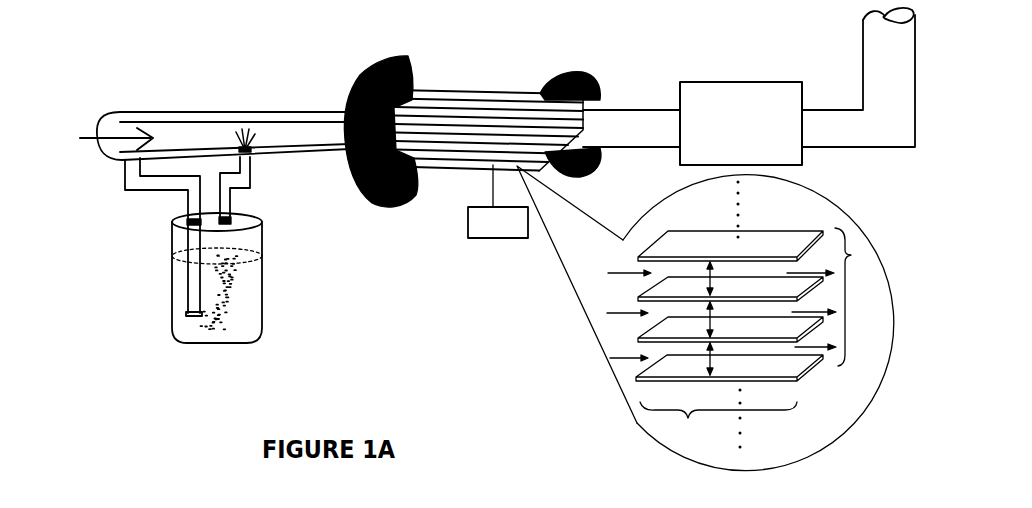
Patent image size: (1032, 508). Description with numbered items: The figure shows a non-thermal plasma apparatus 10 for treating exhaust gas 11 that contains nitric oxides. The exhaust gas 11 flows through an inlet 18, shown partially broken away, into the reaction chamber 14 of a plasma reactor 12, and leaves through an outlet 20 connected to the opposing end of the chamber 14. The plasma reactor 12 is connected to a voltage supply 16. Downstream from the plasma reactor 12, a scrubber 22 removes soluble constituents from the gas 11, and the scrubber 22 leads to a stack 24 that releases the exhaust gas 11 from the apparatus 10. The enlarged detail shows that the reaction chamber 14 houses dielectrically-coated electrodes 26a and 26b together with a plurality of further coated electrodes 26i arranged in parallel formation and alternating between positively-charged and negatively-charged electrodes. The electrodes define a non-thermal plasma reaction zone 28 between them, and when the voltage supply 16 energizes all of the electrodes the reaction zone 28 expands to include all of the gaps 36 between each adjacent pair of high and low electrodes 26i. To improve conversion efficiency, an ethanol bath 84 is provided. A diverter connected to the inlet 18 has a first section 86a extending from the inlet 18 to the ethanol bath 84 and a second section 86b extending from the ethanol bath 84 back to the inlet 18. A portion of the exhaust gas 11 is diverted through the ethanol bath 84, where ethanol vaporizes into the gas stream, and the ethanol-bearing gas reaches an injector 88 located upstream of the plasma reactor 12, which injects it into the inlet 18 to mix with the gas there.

The non-thermal plasma apparatus 10 is at (380, 298).
The exhaust gas 11 is at (443, 244).
The plasma reactor 12 is at (437, 87).
The reaction chamber 14 is at (367, 205).
The voltage supply 16 is at (487, 240).
The inlet 18 is at (295, 112).
The outlet 20 is at (628, 107).
The scrubber 22 is at (738, 82).
The stack 24 is at (865, 50).
The dielectrically-coated electrode 26a is at (810, 230).
The dielectrically-coated electrode 26b is at (852, 286).
The coated electrodes 26i is at (837, 360).
The reaction zone 28 is at (759, 338).
The gaps 36 is at (726, 318).
The ethanol bath 84 is at (170, 305).
The first section 86a is at (135, 193).
The second section 86b is at (255, 175).
The injector 88 is at (238, 150).